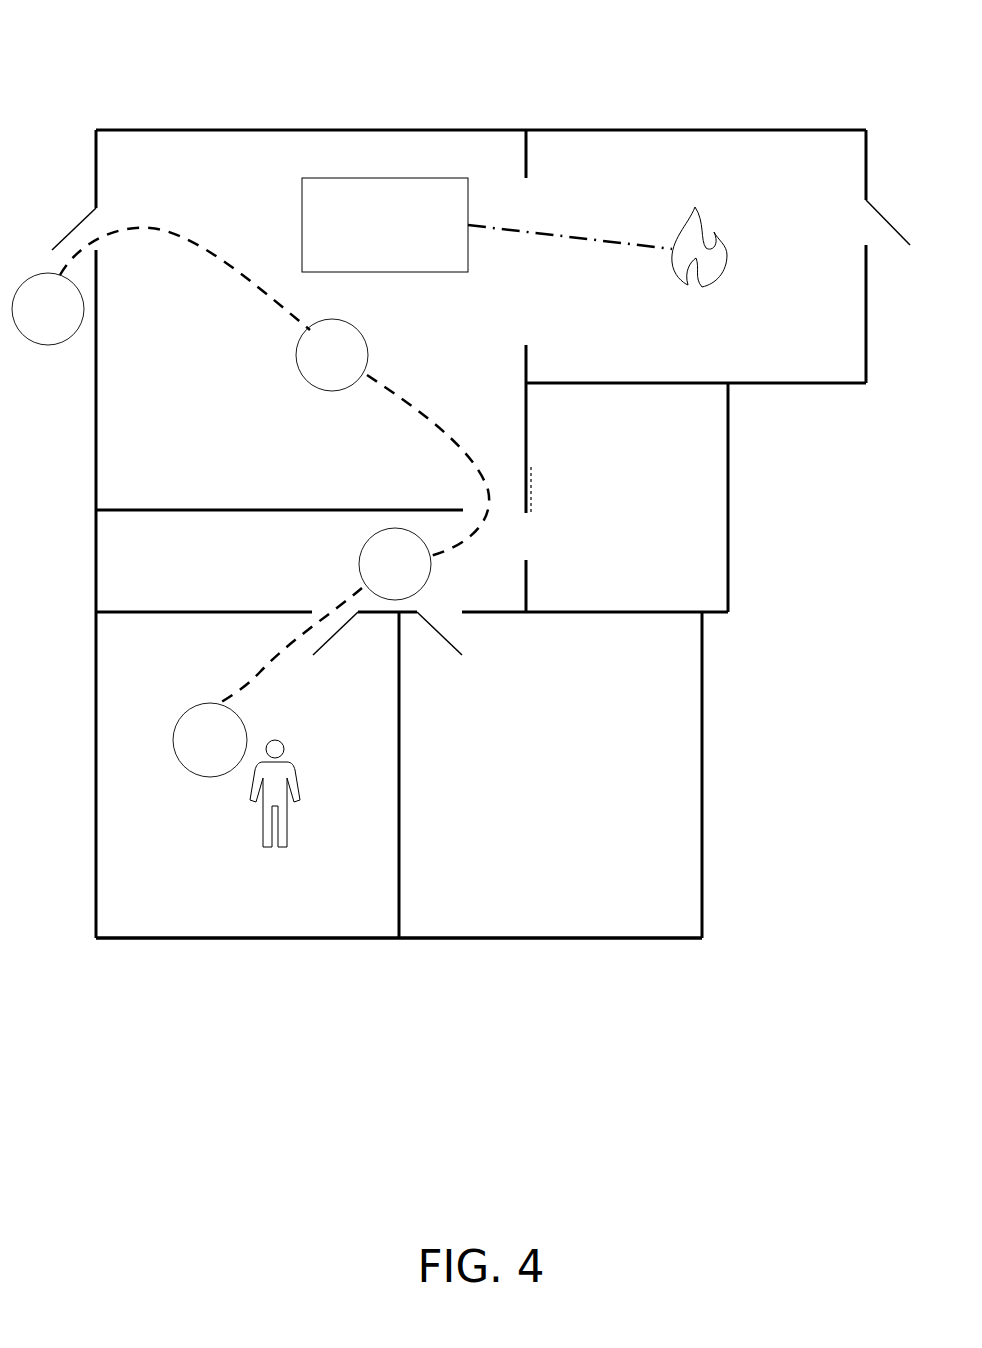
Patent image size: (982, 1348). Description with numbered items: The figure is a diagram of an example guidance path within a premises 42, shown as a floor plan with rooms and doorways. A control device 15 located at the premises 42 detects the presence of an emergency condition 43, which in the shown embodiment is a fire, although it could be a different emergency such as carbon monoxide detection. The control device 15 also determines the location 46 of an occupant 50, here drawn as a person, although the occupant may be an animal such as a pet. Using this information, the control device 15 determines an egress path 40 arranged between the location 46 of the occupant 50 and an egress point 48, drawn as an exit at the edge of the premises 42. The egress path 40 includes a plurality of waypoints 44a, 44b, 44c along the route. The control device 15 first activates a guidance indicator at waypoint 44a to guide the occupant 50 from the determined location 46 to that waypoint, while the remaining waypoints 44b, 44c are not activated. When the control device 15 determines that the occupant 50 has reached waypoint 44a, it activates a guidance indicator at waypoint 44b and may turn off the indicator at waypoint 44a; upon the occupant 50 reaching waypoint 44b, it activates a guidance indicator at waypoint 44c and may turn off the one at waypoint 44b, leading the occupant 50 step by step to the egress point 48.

The control device 15 is at (487, 225).
The egress path 40 is at (258, 240).
The premises 42 is at (158, 1000).
The emergency condition 43 is at (735, 200).
The waypoint 44a is at (375, 577).
The waypoint 44b is at (312, 368).
The waypoint 44c is at (28, 322).
The location 46 is at (196, 753).
The egress point 48 is at (47, 200).
The occupant 50 is at (276, 892).